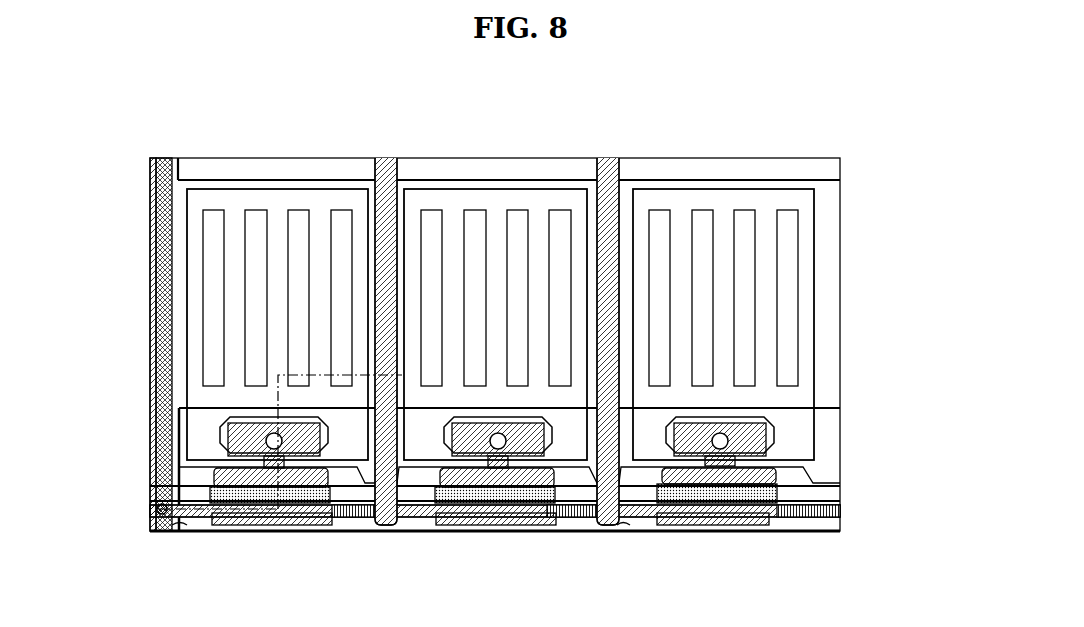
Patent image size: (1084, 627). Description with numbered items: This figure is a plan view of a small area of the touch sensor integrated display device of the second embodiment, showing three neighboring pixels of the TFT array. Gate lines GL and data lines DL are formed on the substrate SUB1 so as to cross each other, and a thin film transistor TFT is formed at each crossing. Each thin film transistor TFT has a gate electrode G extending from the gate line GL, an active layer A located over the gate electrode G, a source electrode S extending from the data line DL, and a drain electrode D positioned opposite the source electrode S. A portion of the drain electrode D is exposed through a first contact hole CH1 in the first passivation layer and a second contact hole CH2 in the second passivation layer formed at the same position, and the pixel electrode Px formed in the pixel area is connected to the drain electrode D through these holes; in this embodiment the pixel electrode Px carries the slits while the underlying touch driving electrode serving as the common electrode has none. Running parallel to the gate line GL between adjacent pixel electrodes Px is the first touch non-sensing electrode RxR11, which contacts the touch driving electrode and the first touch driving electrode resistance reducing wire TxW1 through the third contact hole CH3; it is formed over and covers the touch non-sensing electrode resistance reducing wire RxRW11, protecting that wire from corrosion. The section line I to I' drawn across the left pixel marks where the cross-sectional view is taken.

The data line DL is at (170, 157).
The thin film transistor TFT is at (220, 419).
The pixel electrode Px is at (815, 417).
The gate electrode G is at (343, 524).
The gate line GL is at (832, 480).
The first touch non-sensing electrode RxR11 is at (825, 490).
The touch non-sensing electrode resistance reducing wire RxRW11 is at (840, 513).
The third contact hole CH3 is at (154, 499).
The section line I is at (202, 509).
The section line I' is at (350, 437).
The source electrode S is at (170, 527).
The active layer A is at (212, 498).
The first contact hole CH1 is at (240, 482).
The second contact hole CH2 is at (254, 528).
The drain electrode D is at (328, 437).
The substrate SUB1 is at (833, 534).
The first touch driving electrode resistance reducing wire TxW1 is at (168, 525).